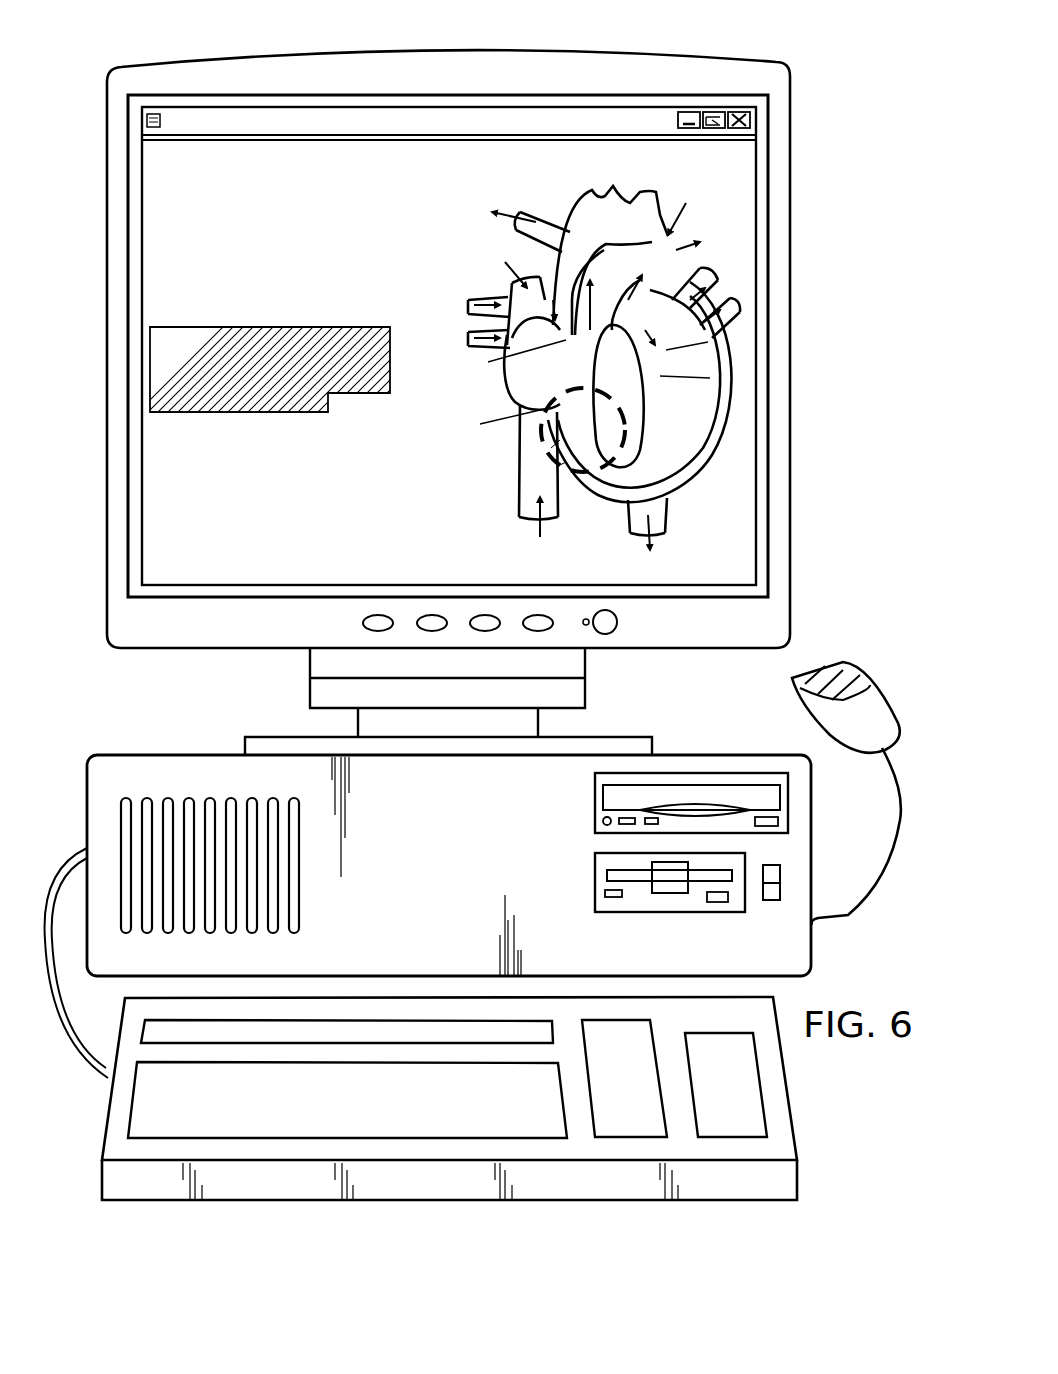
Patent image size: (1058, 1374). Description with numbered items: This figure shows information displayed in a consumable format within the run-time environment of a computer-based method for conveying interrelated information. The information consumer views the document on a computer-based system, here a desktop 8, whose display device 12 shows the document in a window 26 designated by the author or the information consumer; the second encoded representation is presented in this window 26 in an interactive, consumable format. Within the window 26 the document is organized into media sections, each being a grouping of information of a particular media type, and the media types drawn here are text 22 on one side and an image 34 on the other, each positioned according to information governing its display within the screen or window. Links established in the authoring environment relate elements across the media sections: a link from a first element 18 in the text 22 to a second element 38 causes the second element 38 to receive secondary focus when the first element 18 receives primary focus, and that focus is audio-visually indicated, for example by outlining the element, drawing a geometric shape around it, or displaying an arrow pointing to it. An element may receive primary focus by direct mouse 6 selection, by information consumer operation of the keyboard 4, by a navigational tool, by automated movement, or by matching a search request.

The keyboard 4 is at (796, 1125).
The mouse 6 is at (846, 670).
The desktop 8 is at (707, 755).
The display device 12 is at (204, 648).
The first element 18 is at (160, 328).
The text 22 is at (148, 168).
The window 26 is at (194, 108).
The image 34 is at (624, 153).
The second element 38 is at (551, 448).